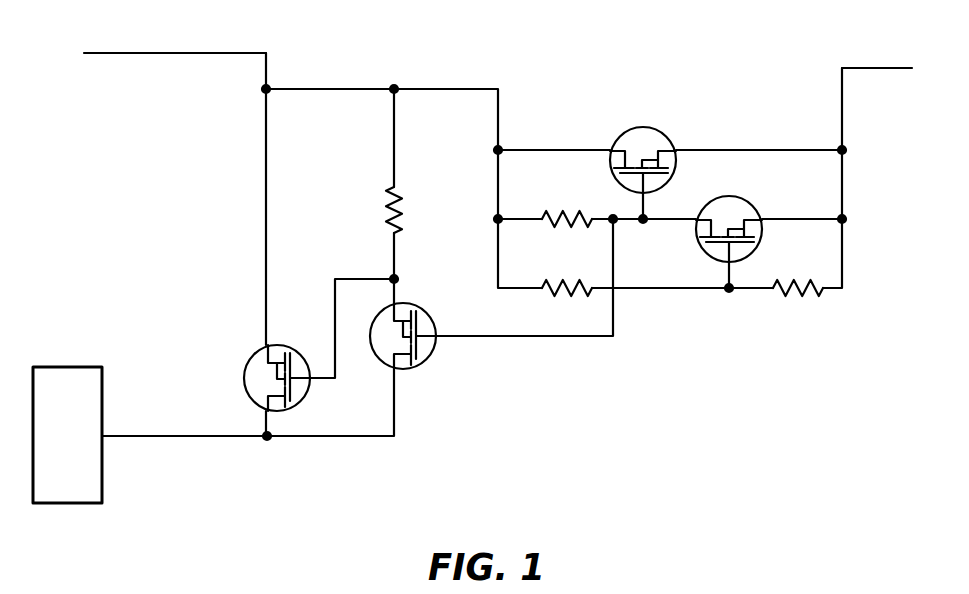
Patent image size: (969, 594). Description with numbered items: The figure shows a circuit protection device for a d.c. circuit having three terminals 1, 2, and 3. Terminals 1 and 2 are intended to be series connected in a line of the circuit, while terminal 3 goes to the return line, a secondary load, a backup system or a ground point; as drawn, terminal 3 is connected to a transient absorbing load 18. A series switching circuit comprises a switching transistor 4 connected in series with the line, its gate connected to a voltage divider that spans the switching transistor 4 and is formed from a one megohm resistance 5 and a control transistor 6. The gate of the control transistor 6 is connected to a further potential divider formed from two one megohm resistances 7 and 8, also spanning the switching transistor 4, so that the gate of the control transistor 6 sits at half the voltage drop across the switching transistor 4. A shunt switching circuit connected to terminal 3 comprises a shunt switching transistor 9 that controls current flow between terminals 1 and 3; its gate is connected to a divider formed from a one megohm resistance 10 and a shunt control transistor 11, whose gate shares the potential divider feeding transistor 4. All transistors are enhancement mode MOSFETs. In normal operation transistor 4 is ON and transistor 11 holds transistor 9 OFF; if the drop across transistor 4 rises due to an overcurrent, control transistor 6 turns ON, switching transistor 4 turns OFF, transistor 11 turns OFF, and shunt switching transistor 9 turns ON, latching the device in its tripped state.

The terminal 1 is at (134, 53).
The terminal 2 is at (855, 68).
The terminal 3 is at (145, 434).
The switching transistor 4 is at (662, 131).
The resistance 5 is at (567, 218).
The control transistor 6 is at (752, 205).
The resistance 7 is at (560, 288).
The resistance 8 is at (808, 298).
The shunt switching transistor 9 is at (278, 346).
The resistance 10 is at (392, 210).
The shunt control transistor 11 is at (418, 363).
The transient absorbing load 18 is at (87, 472).